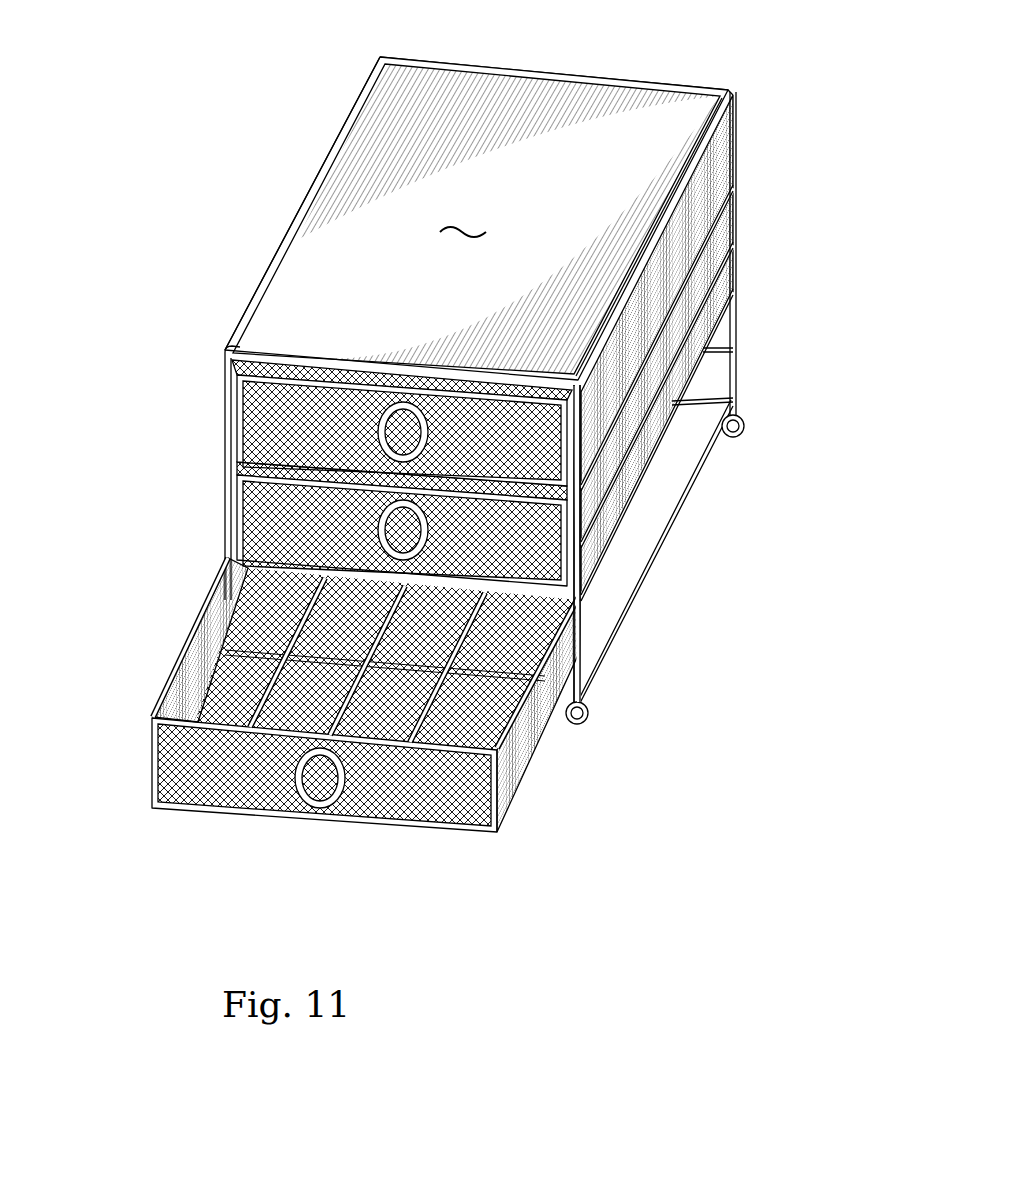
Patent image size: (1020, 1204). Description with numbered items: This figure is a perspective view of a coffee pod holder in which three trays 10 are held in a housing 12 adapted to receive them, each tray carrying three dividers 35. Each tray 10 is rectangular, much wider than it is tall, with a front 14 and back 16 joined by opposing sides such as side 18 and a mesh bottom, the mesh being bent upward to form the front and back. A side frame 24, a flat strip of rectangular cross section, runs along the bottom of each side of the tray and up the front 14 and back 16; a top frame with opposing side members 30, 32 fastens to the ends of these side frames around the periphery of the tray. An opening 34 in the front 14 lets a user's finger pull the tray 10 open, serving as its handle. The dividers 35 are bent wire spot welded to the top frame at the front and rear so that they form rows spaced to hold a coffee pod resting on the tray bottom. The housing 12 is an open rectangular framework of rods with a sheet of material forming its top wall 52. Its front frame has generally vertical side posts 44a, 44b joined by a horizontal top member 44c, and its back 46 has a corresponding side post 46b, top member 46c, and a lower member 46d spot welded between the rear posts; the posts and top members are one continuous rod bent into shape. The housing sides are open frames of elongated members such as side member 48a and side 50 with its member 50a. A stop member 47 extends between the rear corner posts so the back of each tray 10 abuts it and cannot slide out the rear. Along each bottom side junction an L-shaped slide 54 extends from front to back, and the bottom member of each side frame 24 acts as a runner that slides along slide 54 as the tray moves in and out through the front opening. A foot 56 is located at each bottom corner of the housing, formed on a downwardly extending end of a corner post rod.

The tray 10 is at (292, 410).
The housing 12 is at (356, 93).
The front 14 is at (401, 808).
The back 16 is at (525, 815).
The side 18 is at (160, 658).
The side frame 24 is at (235, 387).
The side member 30 is at (722, 252).
The side member 32 is at (195, 622).
The opening 34 is at (320, 790).
The divider 35 is at (300, 645).
The side post 44a is at (222, 472).
The side post 44b is at (582, 673).
The top member 44c is at (238, 358).
The back 46 is at (584, 68).
The side post 46b is at (736, 327).
The top member 46c is at (655, 85).
The bottom member 46d is at (688, 408).
The stop member 47 is at (708, 352).
The side member 48a is at (700, 133).
The side 50 is at (322, 158).
The side member 50a is at (300, 230).
The top wall 52 is at (465, 217).
The slide 54 is at (705, 222).
The foot 56 is at (595, 713).